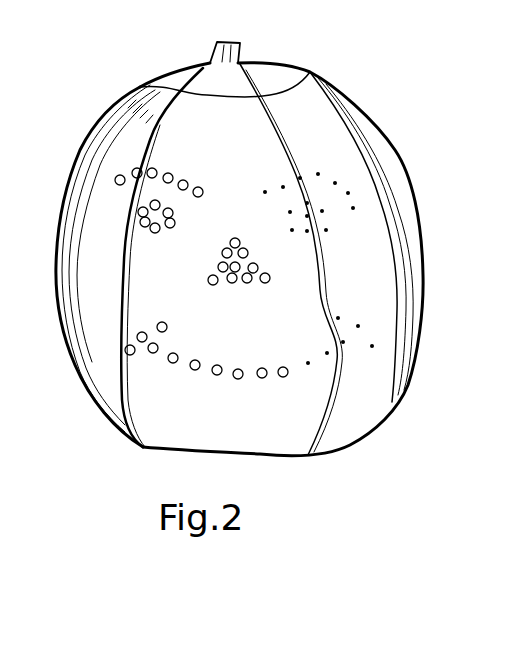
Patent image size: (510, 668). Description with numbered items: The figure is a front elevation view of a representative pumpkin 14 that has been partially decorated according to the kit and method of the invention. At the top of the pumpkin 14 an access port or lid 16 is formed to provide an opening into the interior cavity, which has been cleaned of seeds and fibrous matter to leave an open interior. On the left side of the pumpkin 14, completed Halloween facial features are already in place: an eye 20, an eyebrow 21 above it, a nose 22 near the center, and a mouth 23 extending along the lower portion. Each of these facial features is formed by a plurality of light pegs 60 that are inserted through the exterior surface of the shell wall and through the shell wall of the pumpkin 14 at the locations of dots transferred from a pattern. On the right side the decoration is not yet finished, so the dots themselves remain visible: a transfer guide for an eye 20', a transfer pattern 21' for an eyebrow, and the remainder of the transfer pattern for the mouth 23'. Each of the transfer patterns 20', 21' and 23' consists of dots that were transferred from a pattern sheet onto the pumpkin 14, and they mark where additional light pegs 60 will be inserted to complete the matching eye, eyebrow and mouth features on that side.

The pumpkin 14 is at (392, 200).
The access port or lid 16 is at (280, 57).
The eye 20 is at (143, 257).
The transfer guide for an eye 20' is at (354, 259).
The eyebrow 21 is at (174, 163).
The transfer pattern for an eyebrow 21' is at (365, 178).
The nose 22 is at (241, 297).
The mouth 23 is at (206, 377).
The remainder of the transfer pattern for the mouth 23' is at (369, 385).
The light pegs 60 is at (152, 168).